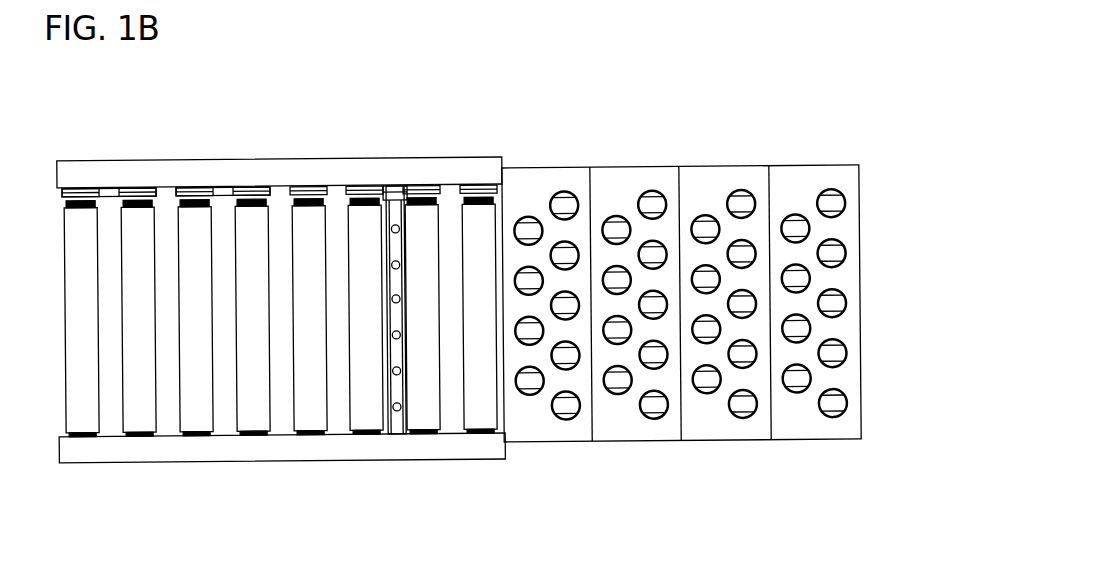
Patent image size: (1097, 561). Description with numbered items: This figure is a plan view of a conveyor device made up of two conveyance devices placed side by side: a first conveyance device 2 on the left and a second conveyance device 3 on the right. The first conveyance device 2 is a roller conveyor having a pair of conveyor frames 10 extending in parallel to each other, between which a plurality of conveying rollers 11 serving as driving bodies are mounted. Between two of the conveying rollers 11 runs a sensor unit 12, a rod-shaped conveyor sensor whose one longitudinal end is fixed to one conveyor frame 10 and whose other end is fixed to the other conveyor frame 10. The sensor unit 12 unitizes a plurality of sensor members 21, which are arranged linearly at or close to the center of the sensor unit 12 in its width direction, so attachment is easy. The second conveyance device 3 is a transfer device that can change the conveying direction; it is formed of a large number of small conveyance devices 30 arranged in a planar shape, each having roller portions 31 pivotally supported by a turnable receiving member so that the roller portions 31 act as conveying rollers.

The first conveyance device 2 is at (282, 308).
The conveyor frame 10 is at (204, 170).
The conveying roller 11 is at (369, 217).
The sensor unit 12 is at (395, 204).
The sensor member 21 is at (396, 411).
The second conveyance device 3 is at (711, 280).
The small conveyance device 30 is at (718, 313).
The roller portion 31 is at (834, 205).